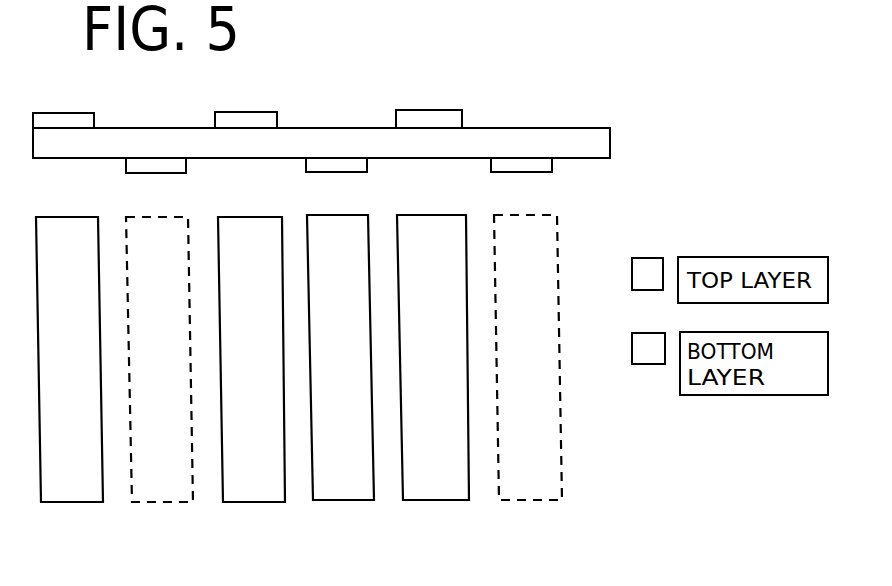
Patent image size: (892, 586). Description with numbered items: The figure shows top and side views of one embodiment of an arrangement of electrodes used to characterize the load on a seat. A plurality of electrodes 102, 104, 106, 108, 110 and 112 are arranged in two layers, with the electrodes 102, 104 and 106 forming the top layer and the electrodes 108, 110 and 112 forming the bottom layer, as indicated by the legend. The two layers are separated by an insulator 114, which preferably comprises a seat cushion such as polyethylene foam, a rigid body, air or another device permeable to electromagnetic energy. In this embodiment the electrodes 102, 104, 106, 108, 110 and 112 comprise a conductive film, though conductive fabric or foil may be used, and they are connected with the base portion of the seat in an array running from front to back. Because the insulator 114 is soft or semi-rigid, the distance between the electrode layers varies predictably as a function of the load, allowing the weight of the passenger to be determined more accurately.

The electrode 102 is at (66, 108).
The electrode 104 is at (240, 108).
The electrode 106 is at (424, 107).
The electrode 108 is at (144, 177).
The electrode 110 is at (329, 211).
The electrode 112 is at (528, 211).
The insulator 114 is at (556, 124).